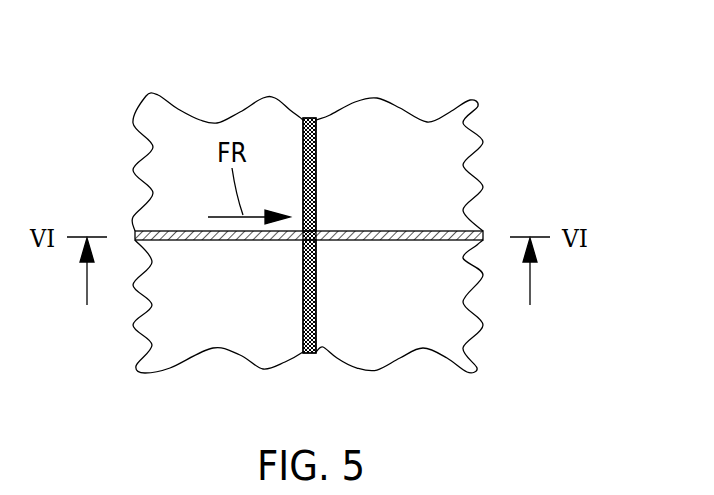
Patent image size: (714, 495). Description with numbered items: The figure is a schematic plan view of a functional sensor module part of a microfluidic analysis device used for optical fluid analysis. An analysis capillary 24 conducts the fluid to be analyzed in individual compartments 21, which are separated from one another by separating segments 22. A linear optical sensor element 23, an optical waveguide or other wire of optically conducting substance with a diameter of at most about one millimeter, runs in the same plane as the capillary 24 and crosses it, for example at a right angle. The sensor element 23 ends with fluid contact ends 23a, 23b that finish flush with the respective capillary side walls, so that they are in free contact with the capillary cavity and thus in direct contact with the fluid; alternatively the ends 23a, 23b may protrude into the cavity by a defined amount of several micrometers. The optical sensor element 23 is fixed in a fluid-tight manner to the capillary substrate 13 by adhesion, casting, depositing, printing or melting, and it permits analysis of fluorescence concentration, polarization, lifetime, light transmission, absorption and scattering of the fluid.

The capillary substrate 13 is at (427, 315).
The compartment 21 is at (355, 242).
The separating segment 22 is at (405, 230).
The optical sensor element 23 is at (302, 140).
The fluid contact end 23a is at (296, 241).
The fluid contact end 23b is at (316, 228).
The analysis capillary 24 is at (200, 230).